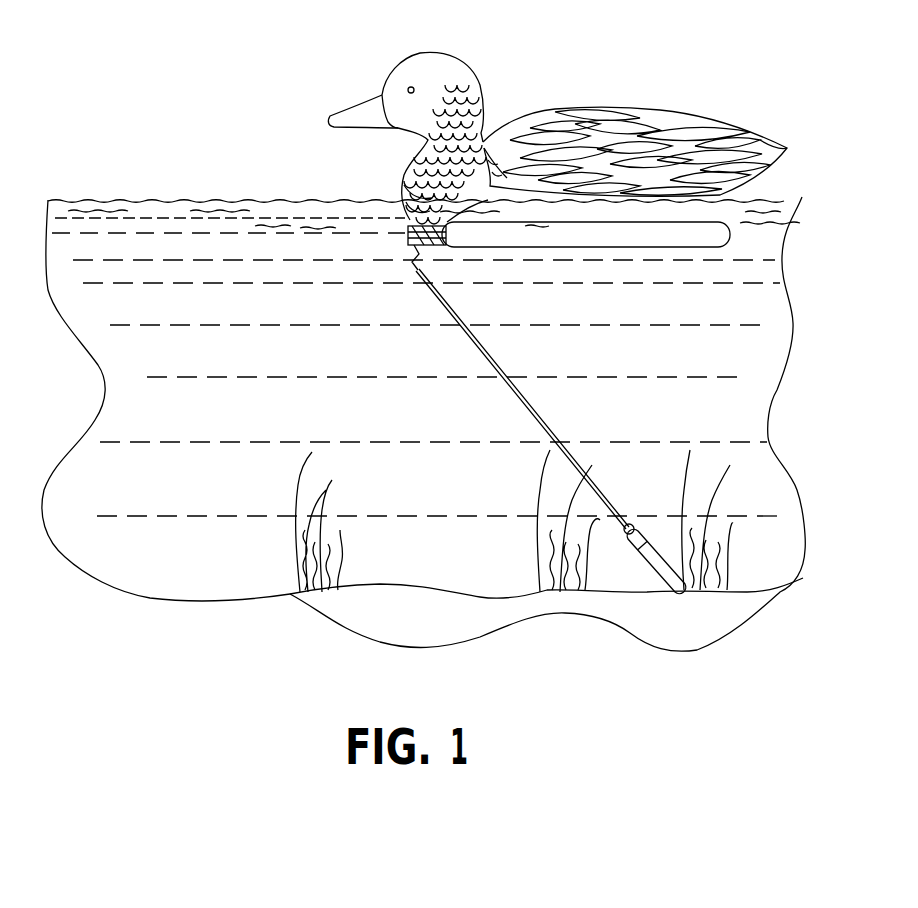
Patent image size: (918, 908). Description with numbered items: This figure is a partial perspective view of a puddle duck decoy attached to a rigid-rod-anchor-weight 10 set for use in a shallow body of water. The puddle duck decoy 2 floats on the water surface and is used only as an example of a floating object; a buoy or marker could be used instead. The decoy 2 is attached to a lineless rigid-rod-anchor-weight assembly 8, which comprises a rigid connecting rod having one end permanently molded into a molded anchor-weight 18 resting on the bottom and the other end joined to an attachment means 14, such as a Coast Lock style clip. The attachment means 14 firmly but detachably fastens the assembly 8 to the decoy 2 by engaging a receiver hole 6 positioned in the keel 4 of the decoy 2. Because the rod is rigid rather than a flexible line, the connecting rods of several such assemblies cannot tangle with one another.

The puddle duck decoy attached to rigid-rod-anchor-weight 10 is at (790, 42).
The puddle duck decoy 2 is at (473, 69).
The keel 4 is at (732, 233).
The receiver hole 6 is at (410, 228).
The lineless rigid-rod-anchor-weight assembly 8 is at (578, 407).
The attachment means 14 is at (414, 236).
The molded anchor-weight 18 is at (686, 553).